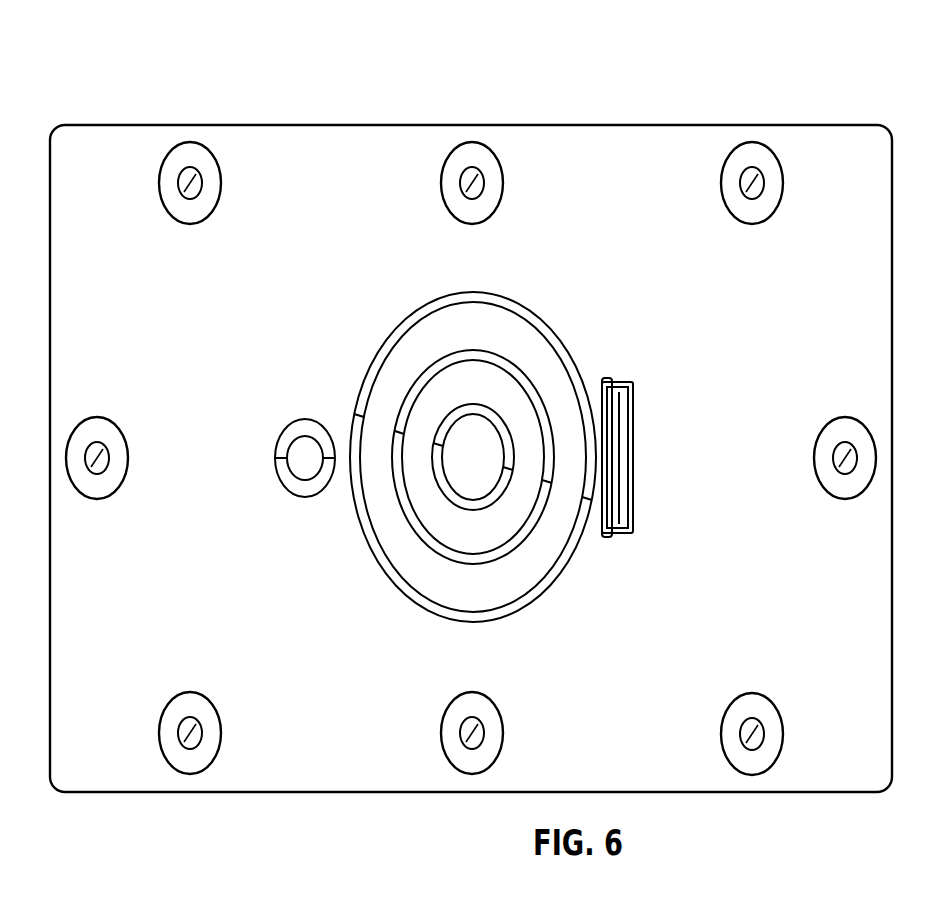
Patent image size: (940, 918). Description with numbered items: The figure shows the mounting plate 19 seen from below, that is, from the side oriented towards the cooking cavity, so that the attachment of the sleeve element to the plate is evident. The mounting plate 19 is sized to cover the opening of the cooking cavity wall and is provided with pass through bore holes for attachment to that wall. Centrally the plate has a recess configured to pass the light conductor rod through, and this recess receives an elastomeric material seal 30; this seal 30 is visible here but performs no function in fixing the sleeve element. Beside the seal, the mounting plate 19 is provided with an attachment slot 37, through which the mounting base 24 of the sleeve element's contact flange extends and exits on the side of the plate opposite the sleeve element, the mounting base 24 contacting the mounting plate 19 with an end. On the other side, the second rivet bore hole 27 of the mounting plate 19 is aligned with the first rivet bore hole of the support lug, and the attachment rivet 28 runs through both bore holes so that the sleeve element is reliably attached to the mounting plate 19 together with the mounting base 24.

The mounting plate 19 is at (781, 352).
The mounting base 24 is at (630, 487).
The second rivet bore hole 27 is at (310, 512).
The attachment rivet 28 is at (305, 440).
The elastomeric material seal 30 is at (530, 534).
The attachment slot 37 is at (609, 372).